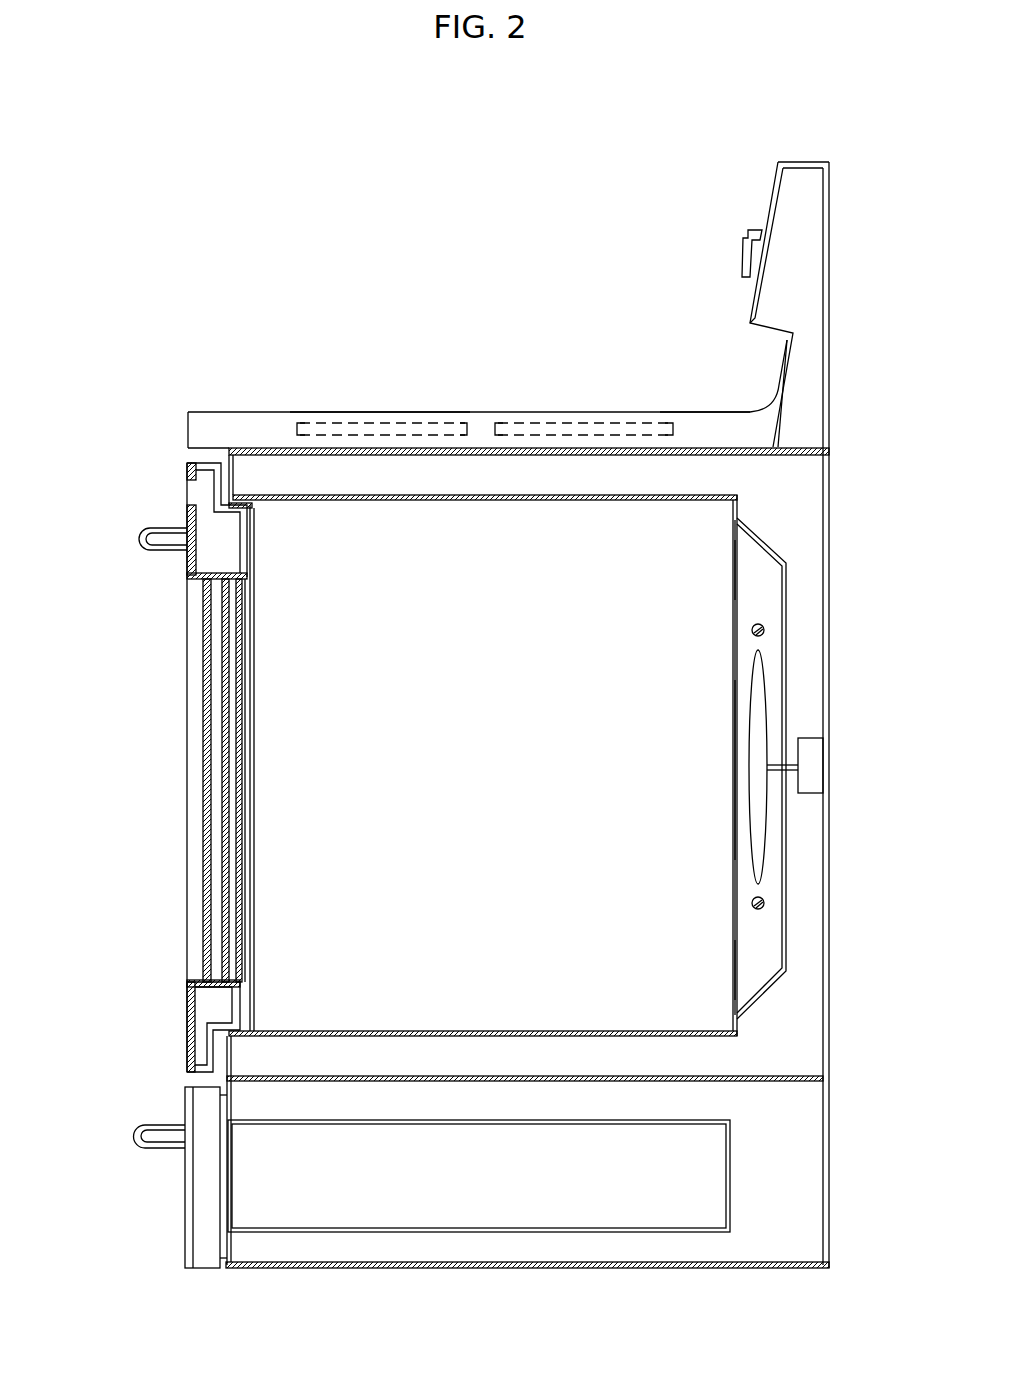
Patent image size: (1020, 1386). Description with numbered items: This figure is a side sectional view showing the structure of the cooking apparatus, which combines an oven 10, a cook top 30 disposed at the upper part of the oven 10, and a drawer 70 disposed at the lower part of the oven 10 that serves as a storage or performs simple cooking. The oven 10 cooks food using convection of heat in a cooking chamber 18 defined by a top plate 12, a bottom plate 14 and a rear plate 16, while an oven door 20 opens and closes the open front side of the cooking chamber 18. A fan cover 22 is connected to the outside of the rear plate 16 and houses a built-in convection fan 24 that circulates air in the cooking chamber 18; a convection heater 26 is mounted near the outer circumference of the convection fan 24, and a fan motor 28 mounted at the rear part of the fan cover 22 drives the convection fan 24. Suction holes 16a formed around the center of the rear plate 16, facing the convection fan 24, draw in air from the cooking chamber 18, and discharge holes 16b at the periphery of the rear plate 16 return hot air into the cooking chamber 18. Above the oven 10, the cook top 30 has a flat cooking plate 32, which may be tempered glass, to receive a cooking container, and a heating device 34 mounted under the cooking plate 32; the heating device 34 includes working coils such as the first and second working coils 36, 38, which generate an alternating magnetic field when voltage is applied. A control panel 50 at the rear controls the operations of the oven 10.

The oven 10 is at (802, 589).
The top plate 12 is at (490, 500).
The bottom plate 14 is at (485, 1031).
The rear plate 16 is at (733, 632).
The suction holes 16a is at (733, 712).
The discharge holes 16b is at (733, 570).
The cooking chamber 18 is at (470, 780).
The oven door 20 is at (186, 826).
The fan cover 22 is at (782, 643).
The convection fan 24 is at (767, 707).
The convection heater 26 is at (765, 902).
The fan motor 28 is at (823, 767).
The cook top 30 is at (212, 384).
The cooking plate 32 is at (283, 412).
The heating device 34 is at (696, 416).
The first working coil 36 is at (548, 422).
The second working coil 38 is at (435, 422).
The control panel 50 is at (730, 194).
The drawer 70 is at (165, 1197).